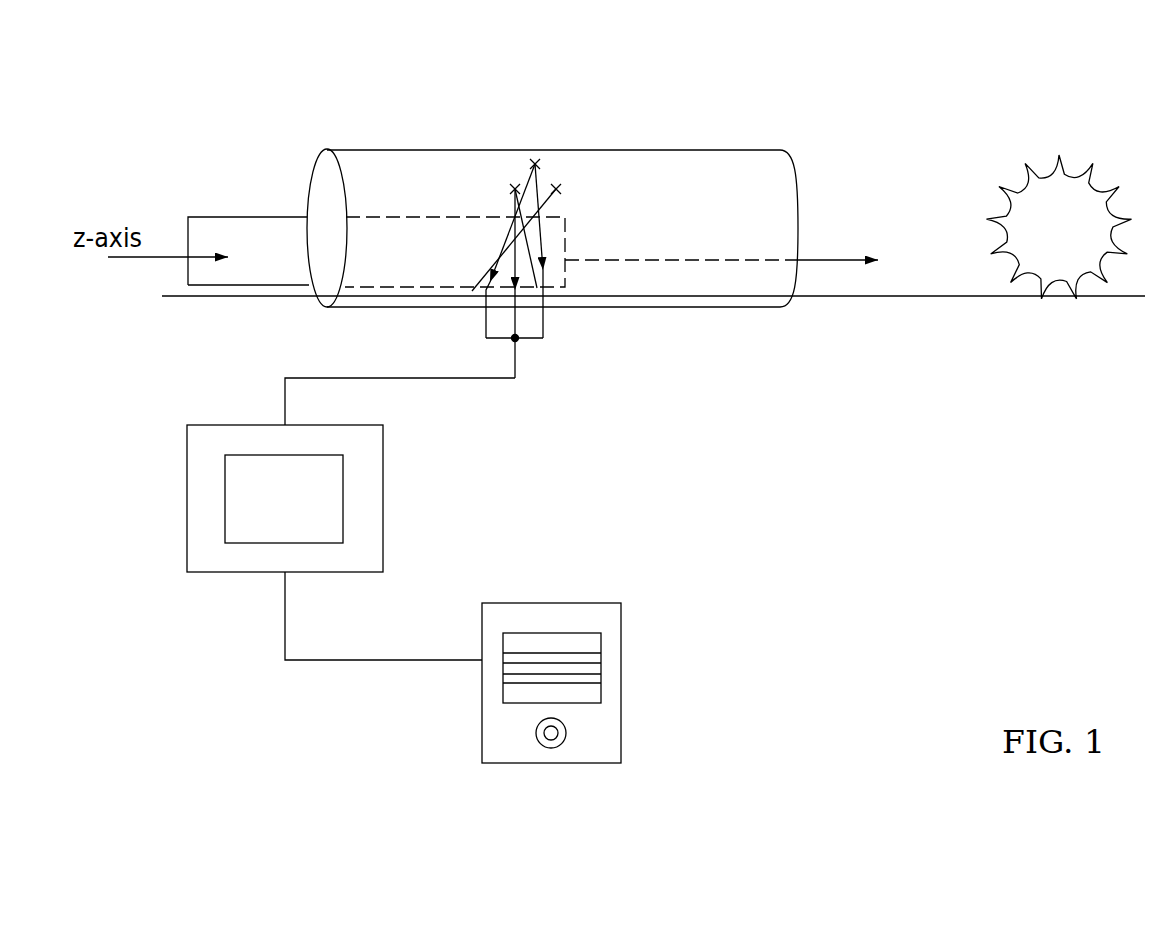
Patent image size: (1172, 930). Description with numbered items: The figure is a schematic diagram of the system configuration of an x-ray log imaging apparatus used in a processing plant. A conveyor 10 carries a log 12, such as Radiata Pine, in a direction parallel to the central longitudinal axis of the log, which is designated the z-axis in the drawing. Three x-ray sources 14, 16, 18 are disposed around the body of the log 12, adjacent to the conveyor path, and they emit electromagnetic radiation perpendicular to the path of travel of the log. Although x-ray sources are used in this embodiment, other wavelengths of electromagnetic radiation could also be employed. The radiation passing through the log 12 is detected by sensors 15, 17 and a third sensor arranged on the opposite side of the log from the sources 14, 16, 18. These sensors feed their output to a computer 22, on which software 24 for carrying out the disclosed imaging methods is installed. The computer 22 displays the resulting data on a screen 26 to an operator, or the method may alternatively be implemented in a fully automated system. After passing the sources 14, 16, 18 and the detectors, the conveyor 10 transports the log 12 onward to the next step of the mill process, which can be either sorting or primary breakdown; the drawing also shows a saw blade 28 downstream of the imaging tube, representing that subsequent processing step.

The conveyor 10 is at (170, 292).
The log 12 is at (752, 150).
The x-ray source 14 is at (556, 186).
The x-ray source 16 is at (516, 220).
The x-ray source 18 is at (516, 237).
The sensor 15 is at (488, 310).
The sensor 17 is at (520, 294).
The computer 22 is at (384, 447).
The software 24 is at (344, 500).
The screen 26 is at (610, 627).
The saw blade 28 is at (1070, 158).